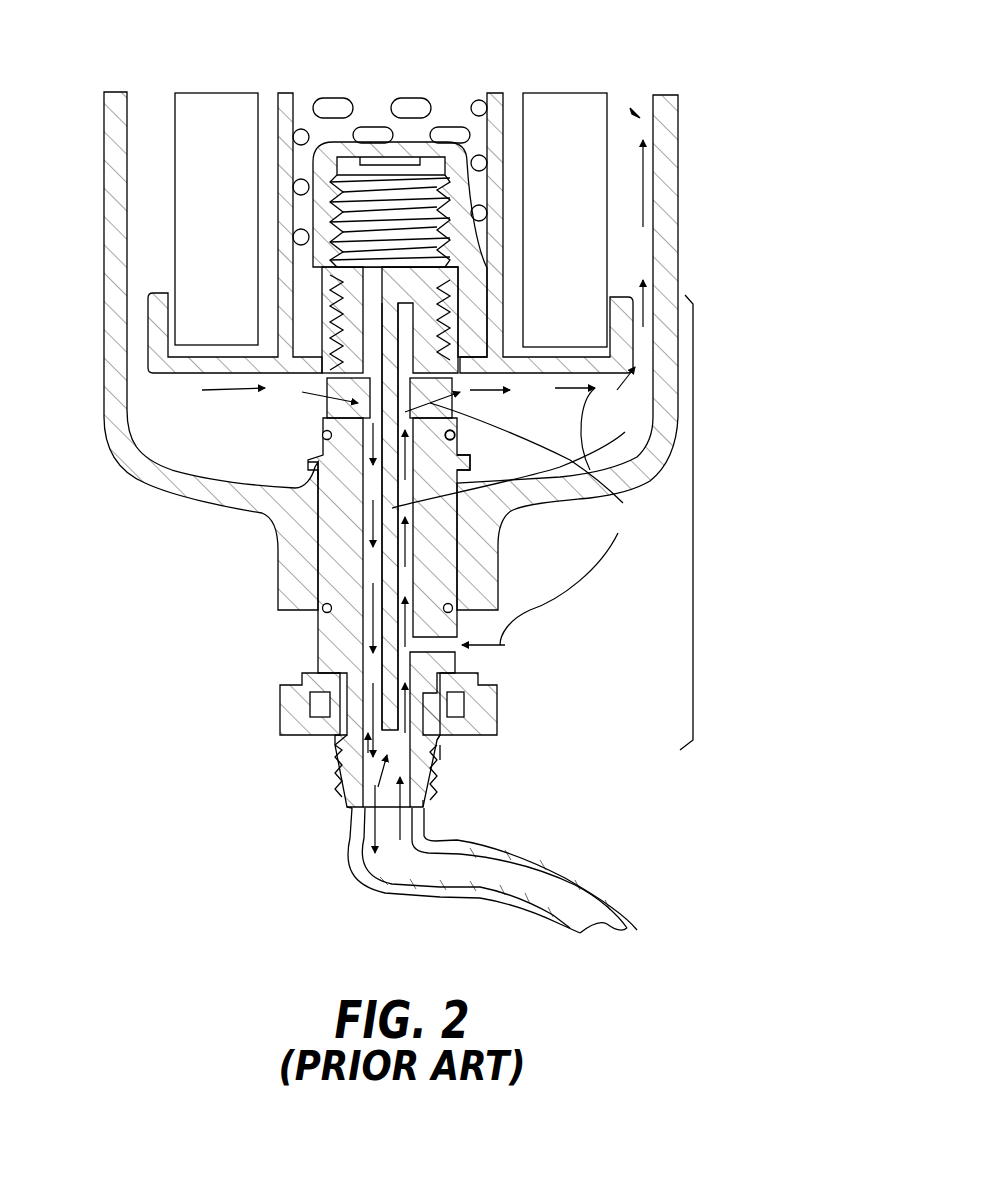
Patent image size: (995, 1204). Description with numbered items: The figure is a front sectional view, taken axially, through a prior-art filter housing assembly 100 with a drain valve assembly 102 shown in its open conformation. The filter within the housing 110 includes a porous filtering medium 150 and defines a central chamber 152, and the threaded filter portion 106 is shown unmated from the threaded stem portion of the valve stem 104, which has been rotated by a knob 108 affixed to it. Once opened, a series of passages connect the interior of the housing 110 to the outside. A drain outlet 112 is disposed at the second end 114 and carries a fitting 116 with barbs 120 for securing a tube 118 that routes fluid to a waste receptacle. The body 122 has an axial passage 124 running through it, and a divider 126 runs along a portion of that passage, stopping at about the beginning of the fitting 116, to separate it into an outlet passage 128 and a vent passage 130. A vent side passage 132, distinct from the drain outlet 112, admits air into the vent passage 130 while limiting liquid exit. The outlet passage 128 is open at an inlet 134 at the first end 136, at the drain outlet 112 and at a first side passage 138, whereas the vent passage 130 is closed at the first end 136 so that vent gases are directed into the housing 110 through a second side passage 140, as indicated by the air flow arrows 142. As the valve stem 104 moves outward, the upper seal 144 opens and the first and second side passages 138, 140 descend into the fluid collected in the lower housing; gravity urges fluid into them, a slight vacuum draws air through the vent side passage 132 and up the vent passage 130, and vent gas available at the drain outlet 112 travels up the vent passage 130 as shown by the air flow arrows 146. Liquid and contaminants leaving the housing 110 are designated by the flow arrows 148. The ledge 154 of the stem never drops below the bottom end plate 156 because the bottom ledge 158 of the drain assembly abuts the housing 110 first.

The filter housing assembly 100 is at (630, 108).
The drain valve assembly 102 is at (694, 525).
The valve stem 104 is at (450, 322).
The threaded filter portion 106 is at (440, 165).
The knob 108 is at (497, 700).
The housing 110 is at (680, 268).
The drain outlet 112 is at (347, 762).
The second end 114 is at (350, 838).
The fitting 116 is at (430, 795).
The tube 118 is at (597, 872).
The barb 120 is at (432, 747).
The body 122 is at (447, 577).
The axial passage 124 is at (383, 778).
The divider 126 is at (460, 483).
The outlet passage 128 is at (368, 577).
The vent passage 130 is at (410, 540).
The vent side passage 132 is at (458, 650).
The inlet 134 is at (375, 290).
The first end 136 is at (478, 128).
The first side passage 138 is at (321, 407).
The second side passage 140 is at (453, 406).
The air flow arrows 142 is at (532, 524).
The upper seal 144 is at (457, 437).
The air flow arrows 146 is at (445, 715).
The flow arrows 148 is at (213, 390).
The porous filtering medium 150 is at (391, 220).
The central chamber 152 is at (368, 106).
The ledge 154 is at (463, 366).
The bottom end plate 156 is at (523, 375).
The bottom ledge 158 is at (310, 462).